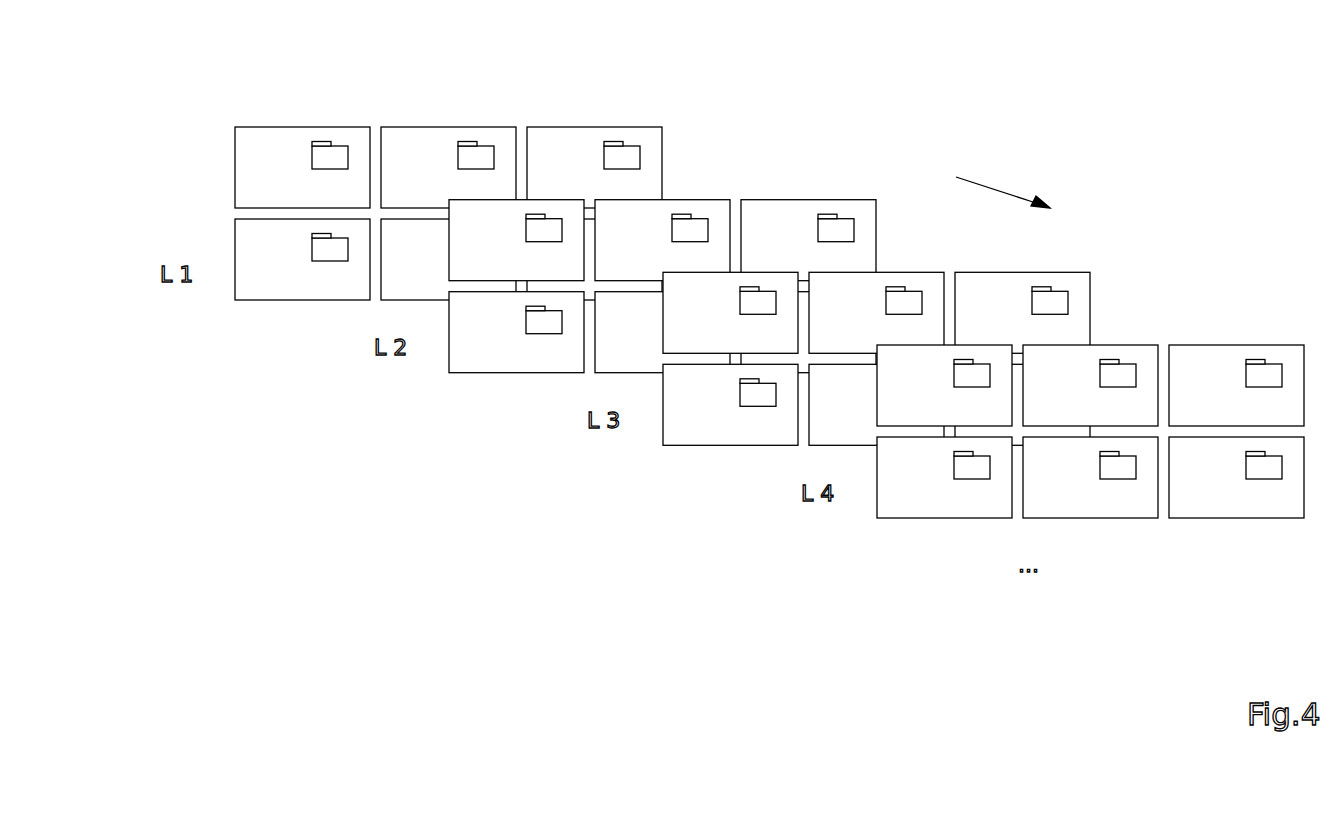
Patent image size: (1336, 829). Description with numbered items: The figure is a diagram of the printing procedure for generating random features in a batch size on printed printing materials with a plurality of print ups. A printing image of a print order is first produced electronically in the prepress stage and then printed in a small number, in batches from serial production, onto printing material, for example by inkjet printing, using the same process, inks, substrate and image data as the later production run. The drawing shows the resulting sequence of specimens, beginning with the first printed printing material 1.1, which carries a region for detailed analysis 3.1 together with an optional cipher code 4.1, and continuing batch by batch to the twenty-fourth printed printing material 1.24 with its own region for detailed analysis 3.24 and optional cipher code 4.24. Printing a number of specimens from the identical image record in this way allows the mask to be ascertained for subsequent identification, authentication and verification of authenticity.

The printed printing material 1.1 is at (306, 121).
The region for detailed analysis 3.1 is at (332, 101).
The optional cipher code 4.1 is at (320, 142).
The printed printing material 1.24 is at (1245, 538).
The region for detailed analysis 3.24 is at (1270, 546).
The optional cipher code 4.24 is at (1253, 453).